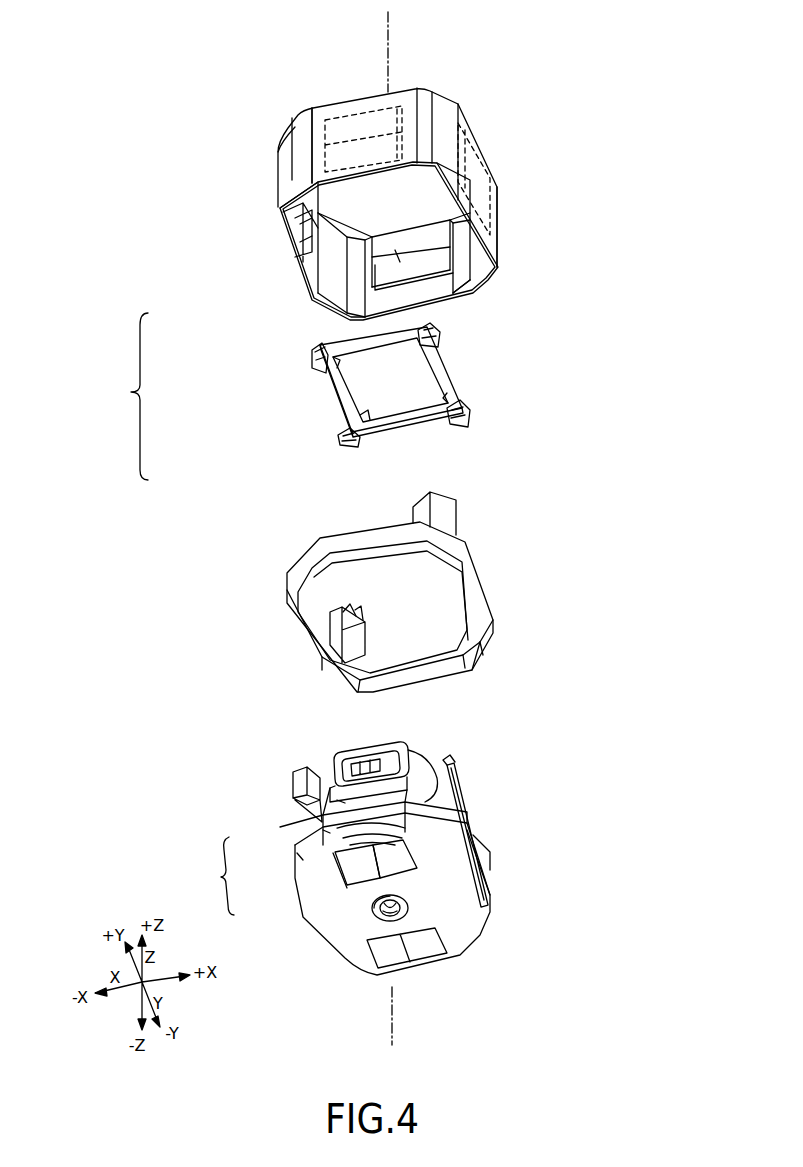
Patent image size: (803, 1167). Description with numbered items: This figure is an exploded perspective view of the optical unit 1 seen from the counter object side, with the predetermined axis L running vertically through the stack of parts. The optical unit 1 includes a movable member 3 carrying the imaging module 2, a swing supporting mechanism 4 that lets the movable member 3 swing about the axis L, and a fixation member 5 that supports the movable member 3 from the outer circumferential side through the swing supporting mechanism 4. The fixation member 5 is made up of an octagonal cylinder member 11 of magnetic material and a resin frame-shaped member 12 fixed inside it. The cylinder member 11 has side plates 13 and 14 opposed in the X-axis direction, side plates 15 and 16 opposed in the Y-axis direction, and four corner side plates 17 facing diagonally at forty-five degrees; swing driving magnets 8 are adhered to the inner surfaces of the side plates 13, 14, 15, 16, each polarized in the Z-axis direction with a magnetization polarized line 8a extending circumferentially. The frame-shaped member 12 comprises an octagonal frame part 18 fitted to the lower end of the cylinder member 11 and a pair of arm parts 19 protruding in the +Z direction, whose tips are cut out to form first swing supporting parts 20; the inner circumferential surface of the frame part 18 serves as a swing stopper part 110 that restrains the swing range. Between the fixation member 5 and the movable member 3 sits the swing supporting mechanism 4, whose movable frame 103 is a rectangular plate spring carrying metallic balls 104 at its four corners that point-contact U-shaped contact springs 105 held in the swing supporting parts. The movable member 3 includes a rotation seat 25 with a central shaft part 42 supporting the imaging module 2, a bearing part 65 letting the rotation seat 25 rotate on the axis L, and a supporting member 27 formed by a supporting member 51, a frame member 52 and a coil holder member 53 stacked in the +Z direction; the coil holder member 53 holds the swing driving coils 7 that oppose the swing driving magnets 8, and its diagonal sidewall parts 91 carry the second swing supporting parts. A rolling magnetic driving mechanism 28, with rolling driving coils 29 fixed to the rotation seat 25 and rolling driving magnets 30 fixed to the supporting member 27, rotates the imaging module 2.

The optical unit 1 is at (612, 168).
The imaging module 2 is at (430, 770).
The movable member 3 is at (341, 871).
The swing supporting mechanism 4 is at (427, 407).
The fixation member 5 is at (131, 396).
The swing driving coil 7 is at (400, 753).
The swing driving magnet 8 is at (343, 113).
The magnetization polarized line 8a is at (308, 245).
The cylinder member 11 is at (250, 275).
The frame-shaped member 12 is at (333, 575).
The side plate 13 is at (494, 197).
The side plate 14 is at (287, 225).
The side plate 15 is at (320, 117).
The side plate 16 is at (453, 290).
The side plate 17 is at (288, 145).
The frame part 18 is at (251, 563).
The arm part 19 is at (452, 513).
The first swing supporting part 20 is at (350, 616).
The rotation seat 25 is at (337, 853).
The supporting member 27 is at (215, 876).
The rolling magnetic driving mechanism 28 is at (379, 941).
The rolling driving coil 29 is at (347, 880).
The rolling driving magnet 30 is at (363, 873).
The shaft part 42 is at (400, 917).
The supporting member 51 is at (300, 860).
The frame member 52 is at (325, 832).
The coil holder member 53 is at (337, 805).
The bearing part 65 is at (410, 910).
The sidewall part 91 is at (300, 788).
The movable frame 103 is at (452, 372).
The ball 104 is at (333, 367).
The contact spring 105 is at (312, 360).
The swing stopper part 110 is at (468, 670).
The axis L is at (390, 43).